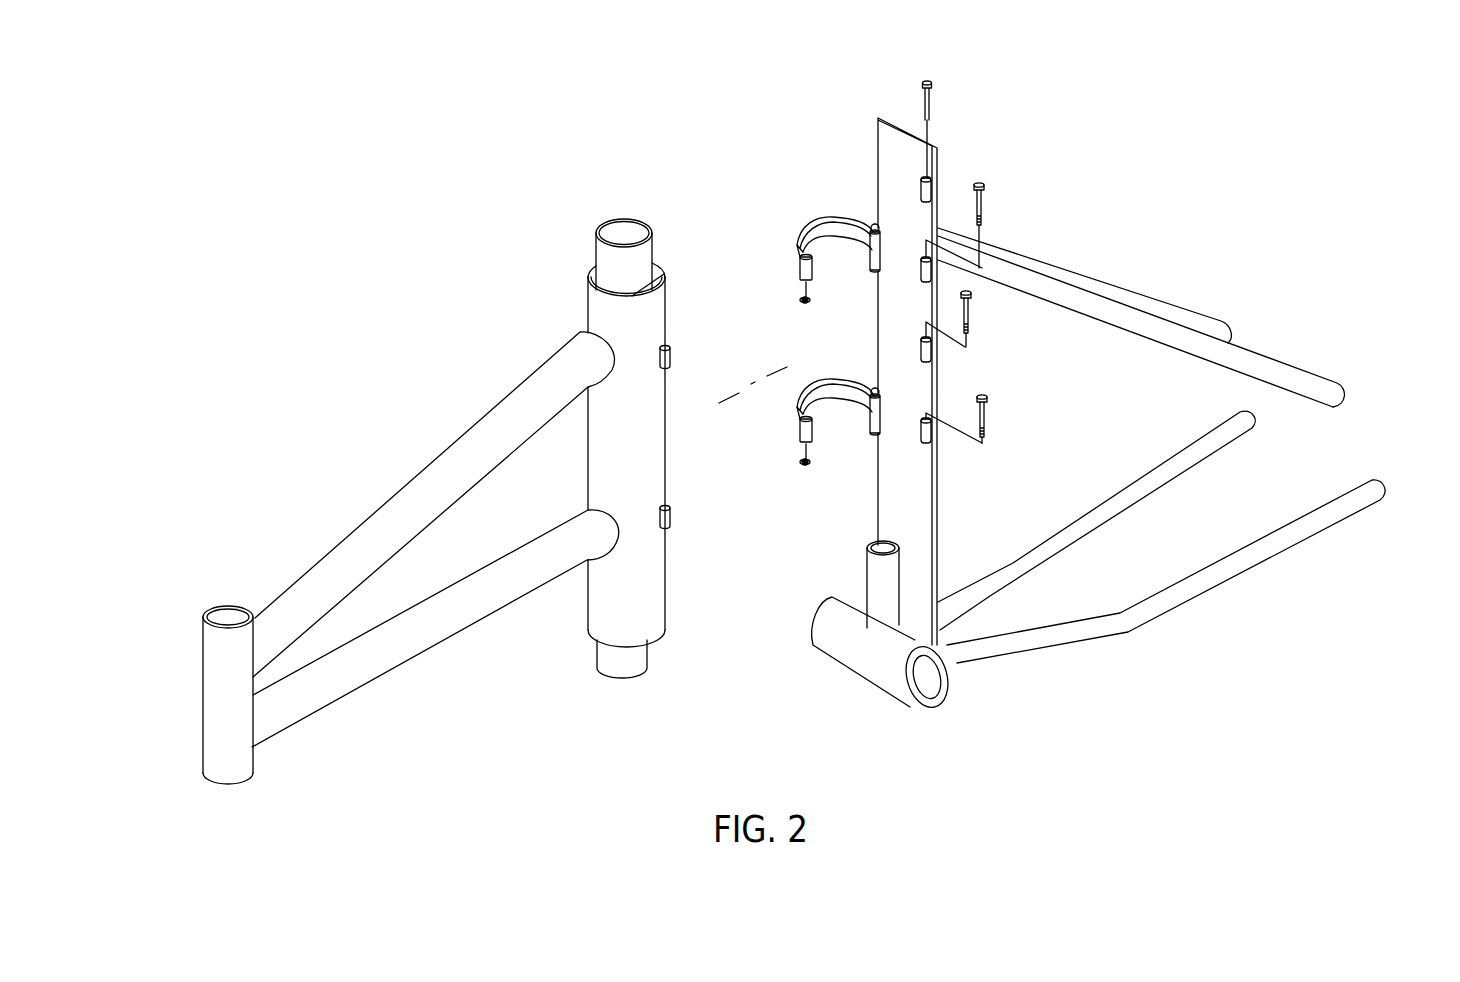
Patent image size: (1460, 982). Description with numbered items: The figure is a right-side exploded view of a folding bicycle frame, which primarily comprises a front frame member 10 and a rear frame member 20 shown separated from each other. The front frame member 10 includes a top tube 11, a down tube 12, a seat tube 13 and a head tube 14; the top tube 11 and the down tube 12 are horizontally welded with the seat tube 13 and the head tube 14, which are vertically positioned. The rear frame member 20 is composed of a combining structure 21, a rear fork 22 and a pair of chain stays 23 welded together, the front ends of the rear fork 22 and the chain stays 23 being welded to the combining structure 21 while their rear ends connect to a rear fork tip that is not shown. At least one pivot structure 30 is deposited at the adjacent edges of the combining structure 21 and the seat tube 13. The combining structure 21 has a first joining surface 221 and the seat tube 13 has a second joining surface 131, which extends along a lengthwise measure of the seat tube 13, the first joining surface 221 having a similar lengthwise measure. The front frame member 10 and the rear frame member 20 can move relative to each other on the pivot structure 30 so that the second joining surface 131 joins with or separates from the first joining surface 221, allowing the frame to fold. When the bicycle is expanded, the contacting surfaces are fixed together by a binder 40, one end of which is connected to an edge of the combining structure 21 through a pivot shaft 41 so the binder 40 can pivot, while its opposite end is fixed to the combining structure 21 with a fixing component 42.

The front frame member 10 is at (147, 250).
The top tube 11 is at (392, 517).
The down tube 12 is at (438, 632).
The seat tube 13 is at (624, 232).
The second joining surface 131 is at (687, 278).
The head tube 14 is at (208, 697).
The rear frame member 20 is at (1380, 85).
The combining structure 21 is at (891, 128).
The rear fork 22 is at (1161, 272).
The chain stays 23 is at (1252, 532).
The first joining surface 221 is at (885, 500).
The pivot structure 30 is at (947, 193).
The binder 40 is at (823, 223).
The pivot shaft 41 is at (877, 226).
The fixing component 42 is at (985, 200).